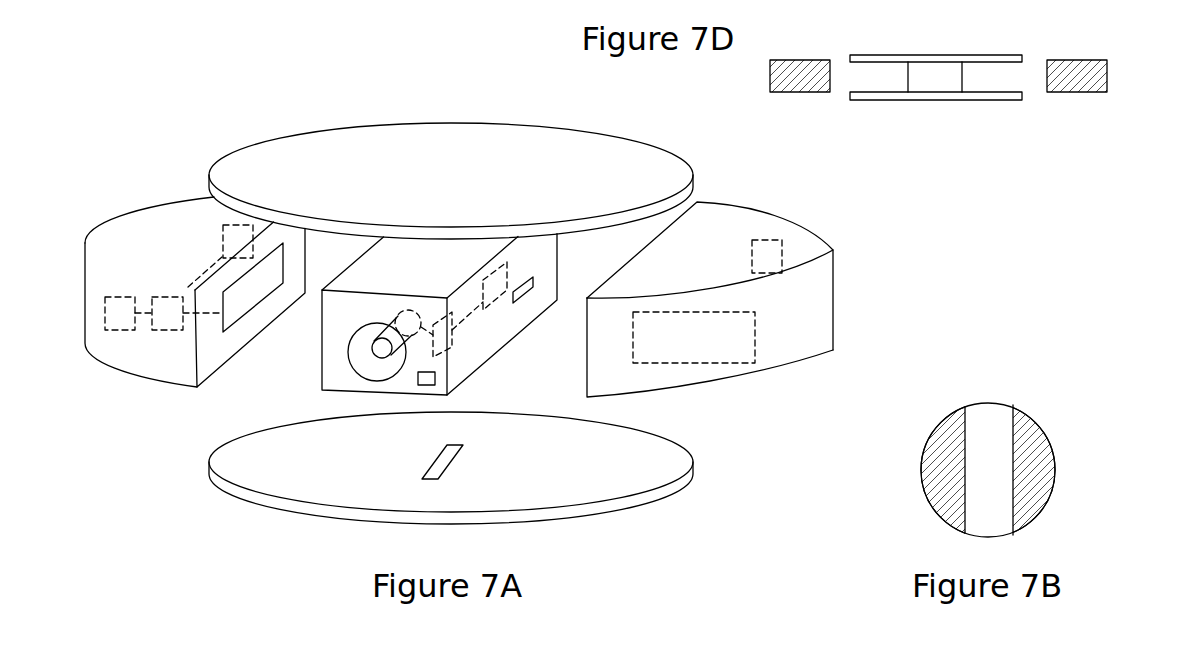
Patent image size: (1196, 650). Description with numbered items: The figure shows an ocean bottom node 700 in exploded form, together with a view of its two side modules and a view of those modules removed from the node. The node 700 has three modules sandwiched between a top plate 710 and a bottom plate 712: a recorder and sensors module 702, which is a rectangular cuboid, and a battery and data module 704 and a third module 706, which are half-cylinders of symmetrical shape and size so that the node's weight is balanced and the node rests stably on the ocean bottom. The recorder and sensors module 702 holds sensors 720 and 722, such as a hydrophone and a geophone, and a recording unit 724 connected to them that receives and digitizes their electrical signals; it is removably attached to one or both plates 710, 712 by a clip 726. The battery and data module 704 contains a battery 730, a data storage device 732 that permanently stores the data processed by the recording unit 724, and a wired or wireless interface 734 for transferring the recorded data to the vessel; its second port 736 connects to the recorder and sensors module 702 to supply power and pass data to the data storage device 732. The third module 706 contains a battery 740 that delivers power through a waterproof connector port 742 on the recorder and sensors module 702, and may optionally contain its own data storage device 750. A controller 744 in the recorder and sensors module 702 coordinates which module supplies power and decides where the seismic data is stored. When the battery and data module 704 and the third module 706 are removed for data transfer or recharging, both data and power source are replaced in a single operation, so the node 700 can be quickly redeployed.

In FIG. 7A, the node 700 is at (440, 101).
In FIG. 7A, the recorder and sensors module 702 is at (335, 375).
In FIG. 7D, the recorder and sensors module 702 is at (930, 72).
In FIG. 7A, the battery and data module 704 is at (138, 367).
In FIG. 7D, the battery and data module 704 is at (788, 72).
In FIG. 7B, the battery and data module 704 is at (932, 468).
In FIG. 7A, the third module 706 is at (697, 381).
In FIG. 7D, the third module 706 is at (1090, 74).
In FIG. 7B, the third module 706 is at (1027, 457).
In FIG. 7A, the top plate 710 is at (295, 148).
In FIG. 7A, the bottom plate 712 is at (262, 473).
In FIG. 7A, the sensor 720 is at (378, 309).
In FIG. 7A, the sensor 722 is at (453, 333).
In FIG. 7A, the recording unit 724 is at (493, 297).
In FIG. 7A, the clip 726 is at (452, 453).
In FIG. 7A, the battery 730 is at (118, 330).
In FIG. 7A, the data storage device 732 is at (158, 330).
In FIG. 7A, the wired and/or wireless interface 734 is at (222, 232).
In FIG. 7A, the second port 736 is at (262, 292).
In FIG. 7A, the battery 740 is at (748, 340).
In FIG. 7A, the port 742 is at (526, 290).
In FIG. 7A, the controller 744 is at (430, 380).
In FIG. 7A, the data storage device 750 is at (777, 251).